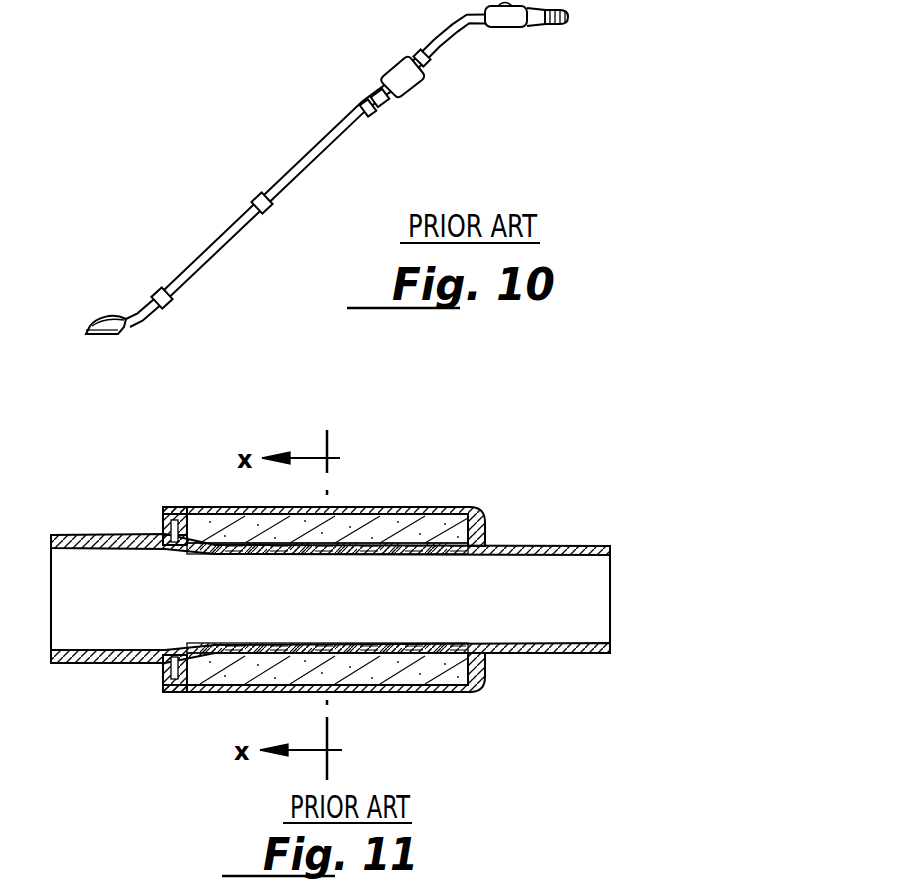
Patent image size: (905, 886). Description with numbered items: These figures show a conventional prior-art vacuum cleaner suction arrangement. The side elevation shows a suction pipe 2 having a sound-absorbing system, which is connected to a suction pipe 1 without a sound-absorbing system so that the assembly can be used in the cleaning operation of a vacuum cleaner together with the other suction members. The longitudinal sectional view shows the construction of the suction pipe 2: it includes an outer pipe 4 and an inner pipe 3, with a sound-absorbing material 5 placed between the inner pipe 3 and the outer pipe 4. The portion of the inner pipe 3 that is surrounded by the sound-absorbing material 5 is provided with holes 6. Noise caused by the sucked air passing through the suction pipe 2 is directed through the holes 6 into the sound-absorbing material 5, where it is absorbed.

In FIG. 10, the suction pipe without a sound-absorbing system 1 is at (293, 166).
In FIG. 10, the suction pipe with a sound-absorbing system 2 is at (396, 74).
In FIG. 11, the inner pipe 3 is at (105, 540).
In FIG. 11, the outer pipe 4 is at (450, 512).
In FIG. 11, the sound-absorbing material 5 is at (362, 520).
In FIG. 11, the holes 6 is at (413, 556).